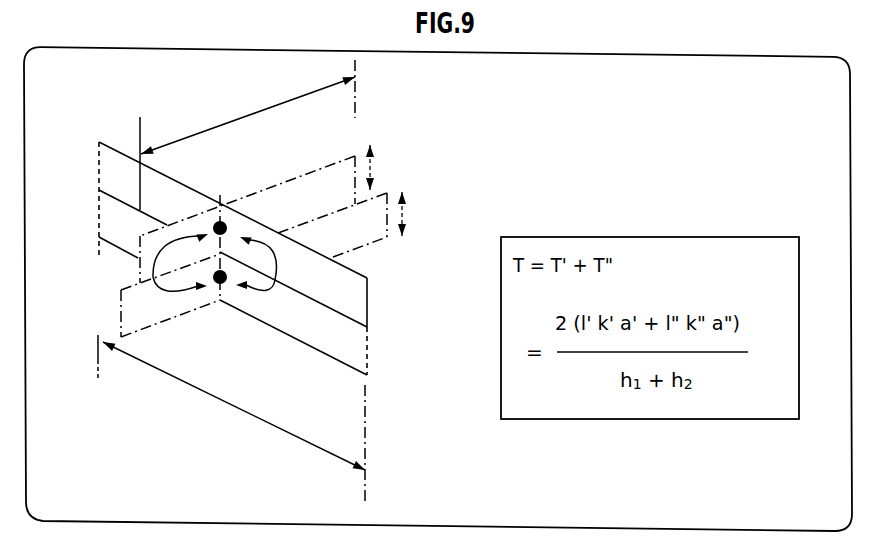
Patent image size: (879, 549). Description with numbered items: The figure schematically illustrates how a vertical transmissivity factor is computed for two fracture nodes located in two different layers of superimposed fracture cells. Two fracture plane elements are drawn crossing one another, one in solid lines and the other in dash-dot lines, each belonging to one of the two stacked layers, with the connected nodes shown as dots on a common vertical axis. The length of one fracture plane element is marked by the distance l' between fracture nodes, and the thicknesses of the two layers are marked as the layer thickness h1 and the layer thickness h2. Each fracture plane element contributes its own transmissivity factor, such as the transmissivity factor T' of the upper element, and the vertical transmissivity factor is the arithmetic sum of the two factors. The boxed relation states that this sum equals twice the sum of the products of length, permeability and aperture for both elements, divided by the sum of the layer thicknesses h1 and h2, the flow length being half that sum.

The fracture node distance l' is at (248, 115).
The layer thickness h1 is at (417, 214).
The layer thickness h2 is at (384, 167).
The transmissivity factor T' is at (180, 261).